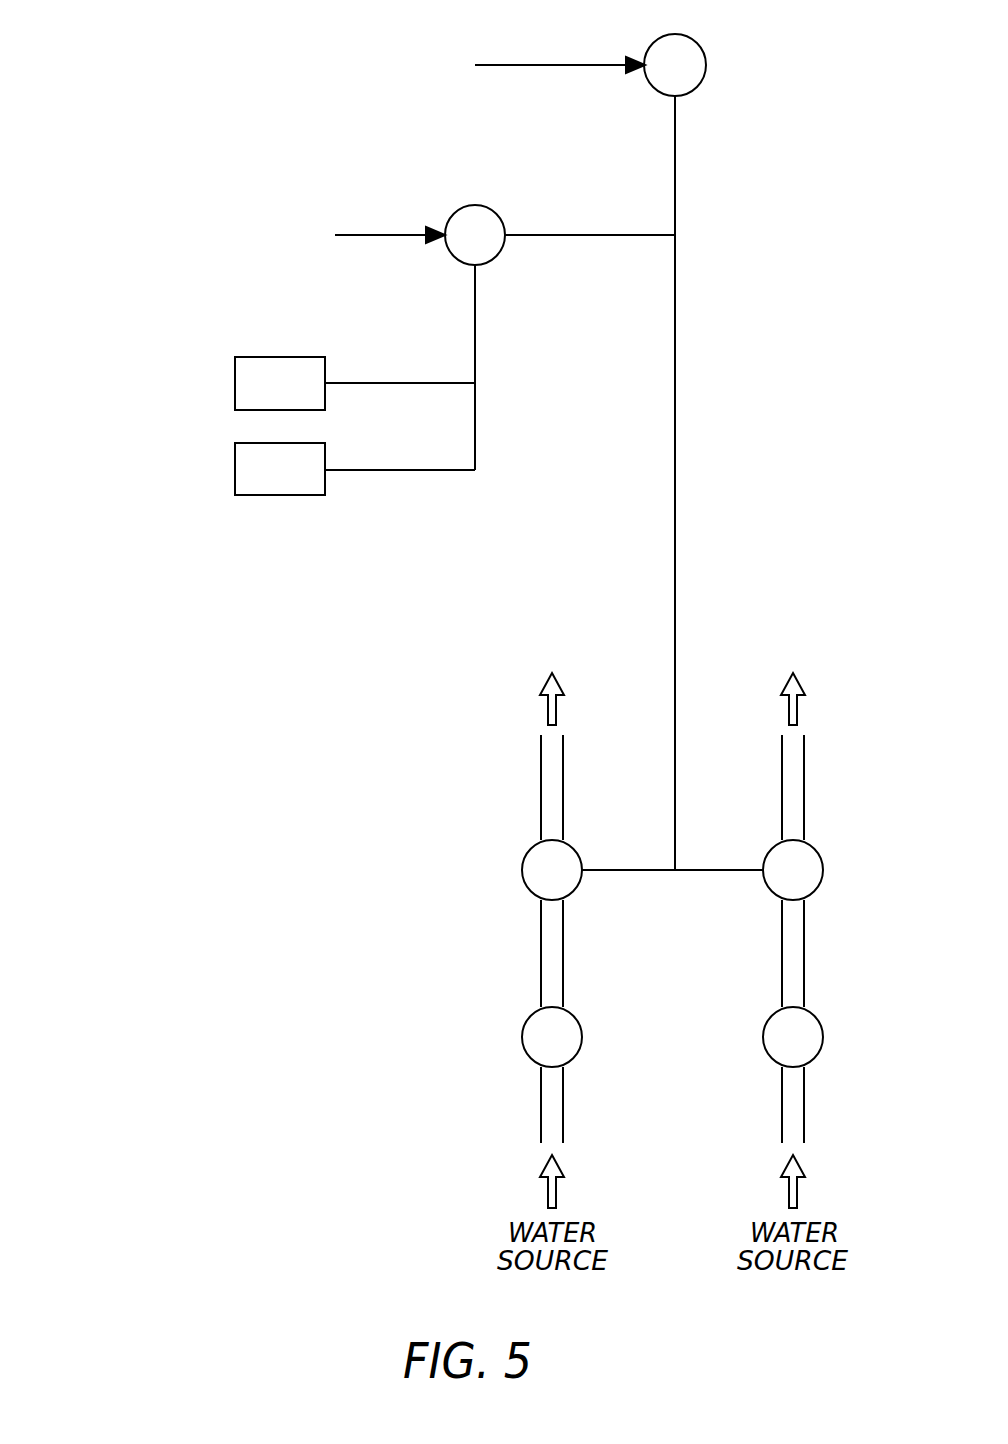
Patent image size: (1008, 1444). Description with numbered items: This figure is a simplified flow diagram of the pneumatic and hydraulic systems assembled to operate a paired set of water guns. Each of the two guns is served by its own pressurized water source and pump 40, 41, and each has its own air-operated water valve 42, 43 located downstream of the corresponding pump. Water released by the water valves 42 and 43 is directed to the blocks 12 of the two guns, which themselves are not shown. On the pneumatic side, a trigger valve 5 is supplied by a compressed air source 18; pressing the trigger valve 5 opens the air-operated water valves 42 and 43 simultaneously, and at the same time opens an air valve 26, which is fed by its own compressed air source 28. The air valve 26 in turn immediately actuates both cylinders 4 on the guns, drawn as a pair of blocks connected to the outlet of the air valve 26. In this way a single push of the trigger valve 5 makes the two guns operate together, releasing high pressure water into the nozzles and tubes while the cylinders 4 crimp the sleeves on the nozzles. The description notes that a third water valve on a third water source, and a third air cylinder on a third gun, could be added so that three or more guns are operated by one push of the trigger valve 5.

The cylinders 4 is at (235, 464).
The trigger valve 5 is at (706, 61).
The blocks 12 is at (672, 654).
The compressed air source 18 is at (499, 65).
The air valve 26 is at (492, 206).
The compressed air source 28 is at (328, 234).
The pump 40 is at (522, 1034).
The pump 41 is at (823, 1033).
The air-operated water valve 42 is at (522, 868).
The air-operated water valve 43 is at (823, 865).